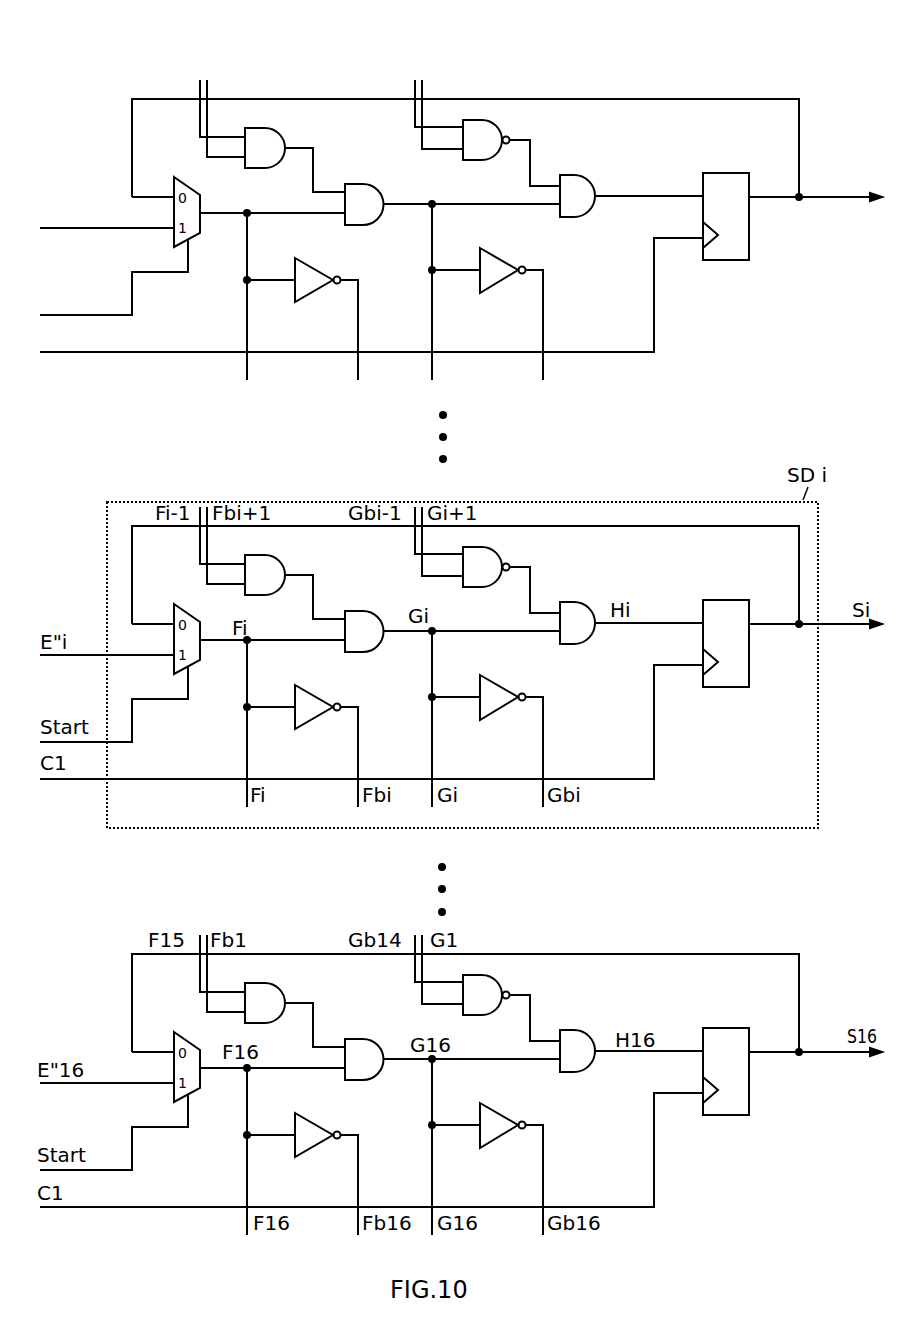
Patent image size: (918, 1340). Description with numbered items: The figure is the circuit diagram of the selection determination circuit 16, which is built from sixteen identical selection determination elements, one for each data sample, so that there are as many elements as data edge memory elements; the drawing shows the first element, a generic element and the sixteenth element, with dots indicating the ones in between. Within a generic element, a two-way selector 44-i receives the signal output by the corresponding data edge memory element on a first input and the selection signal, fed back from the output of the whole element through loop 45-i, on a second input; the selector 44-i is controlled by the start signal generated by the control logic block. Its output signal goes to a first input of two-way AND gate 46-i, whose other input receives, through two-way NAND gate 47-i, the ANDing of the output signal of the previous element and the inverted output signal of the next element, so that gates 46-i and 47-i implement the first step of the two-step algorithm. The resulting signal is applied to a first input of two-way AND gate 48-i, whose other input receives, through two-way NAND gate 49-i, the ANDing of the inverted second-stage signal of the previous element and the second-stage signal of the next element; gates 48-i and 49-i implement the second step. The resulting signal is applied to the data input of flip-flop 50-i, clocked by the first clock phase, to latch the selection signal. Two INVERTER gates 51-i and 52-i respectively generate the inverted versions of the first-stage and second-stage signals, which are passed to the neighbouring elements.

The selection determination circuit 16 is at (740, 37).
The two-way selector 44-i is at (202, 661).
The loop 45-i is at (465, 575).
The two-way AND gate 46-i is at (374, 651).
The two-way NAND gate 47-i is at (267, 598).
The two-way AND gate 48-i is at (594, 643).
The two-way NAND gate 49-i is at (486, 587).
The flip-flop 50-i is at (736, 665).
The INVERTER gate 51-i is at (318, 725).
The INVERTER gate 52-i is at (504, 714).